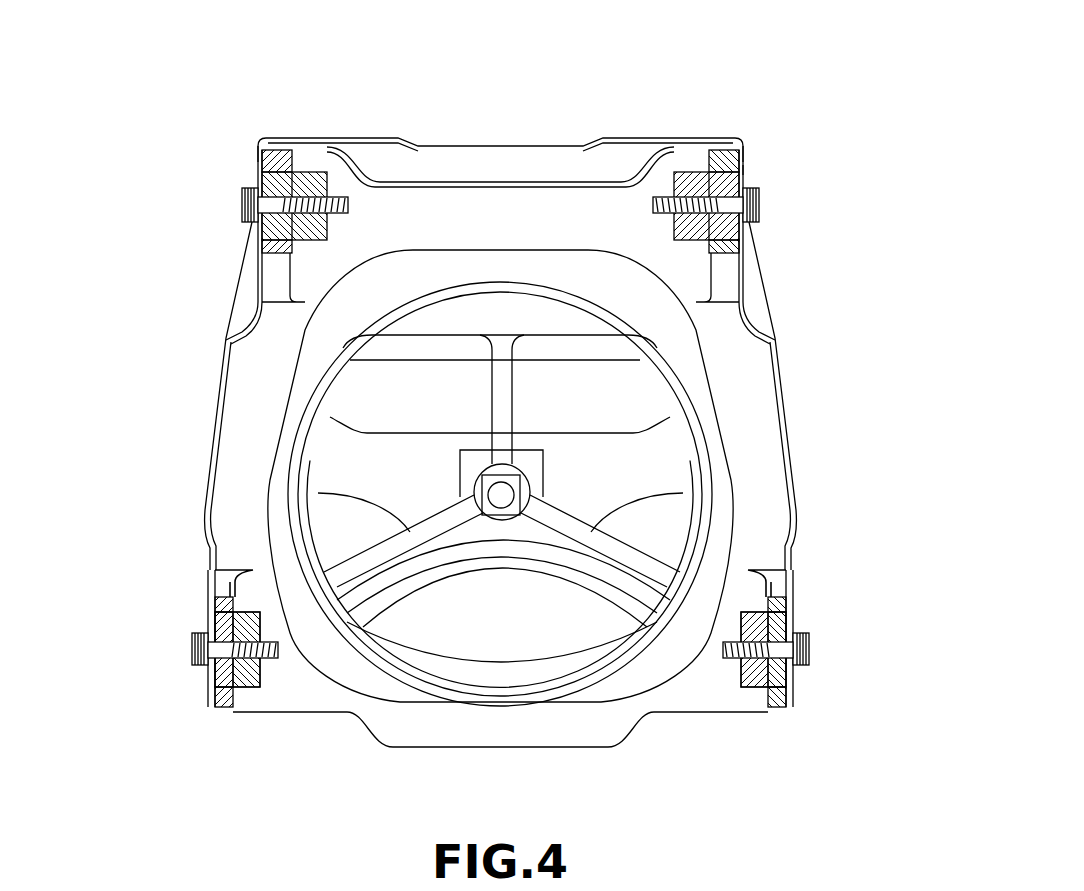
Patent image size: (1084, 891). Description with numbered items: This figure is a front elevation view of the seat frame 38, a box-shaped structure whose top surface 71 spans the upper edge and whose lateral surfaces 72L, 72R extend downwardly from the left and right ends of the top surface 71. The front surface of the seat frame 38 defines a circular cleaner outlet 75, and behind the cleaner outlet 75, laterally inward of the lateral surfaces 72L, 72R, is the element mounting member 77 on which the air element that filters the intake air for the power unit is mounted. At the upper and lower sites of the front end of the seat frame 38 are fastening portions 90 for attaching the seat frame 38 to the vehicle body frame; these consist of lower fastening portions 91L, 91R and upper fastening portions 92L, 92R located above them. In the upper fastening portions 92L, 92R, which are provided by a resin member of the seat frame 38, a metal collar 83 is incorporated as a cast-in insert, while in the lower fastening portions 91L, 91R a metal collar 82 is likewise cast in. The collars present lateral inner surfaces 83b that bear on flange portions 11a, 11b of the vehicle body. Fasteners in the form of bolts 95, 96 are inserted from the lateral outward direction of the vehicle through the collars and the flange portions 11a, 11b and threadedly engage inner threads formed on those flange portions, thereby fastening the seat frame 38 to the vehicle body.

The seat frame 38 is at (741, 112).
The top surface 71 is at (648, 140).
The lateral surface 72R is at (208, 428).
The lateral surface 72L is at (793, 428).
The cleaner outlet 75 is at (452, 670).
The element mounting member 77 is at (503, 385).
The metal collar 82 is at (217, 672).
The metal collar 83 is at (255, 158).
The lateral inner surface 83b is at (304, 160).
The flange portion 11a is at (313, 160).
The flange portion 11b is at (258, 688).
The fastening portion 90 is at (791, 180).
The lower fastening portion 91R is at (171, 607).
The lower fastening portion 91L is at (830, 607).
The upper fastening portion 92R is at (210, 206).
The upper fastening portion 92L is at (791, 206).
The fastener 95 is at (243, 212).
The bolt 96 is at (192, 650).